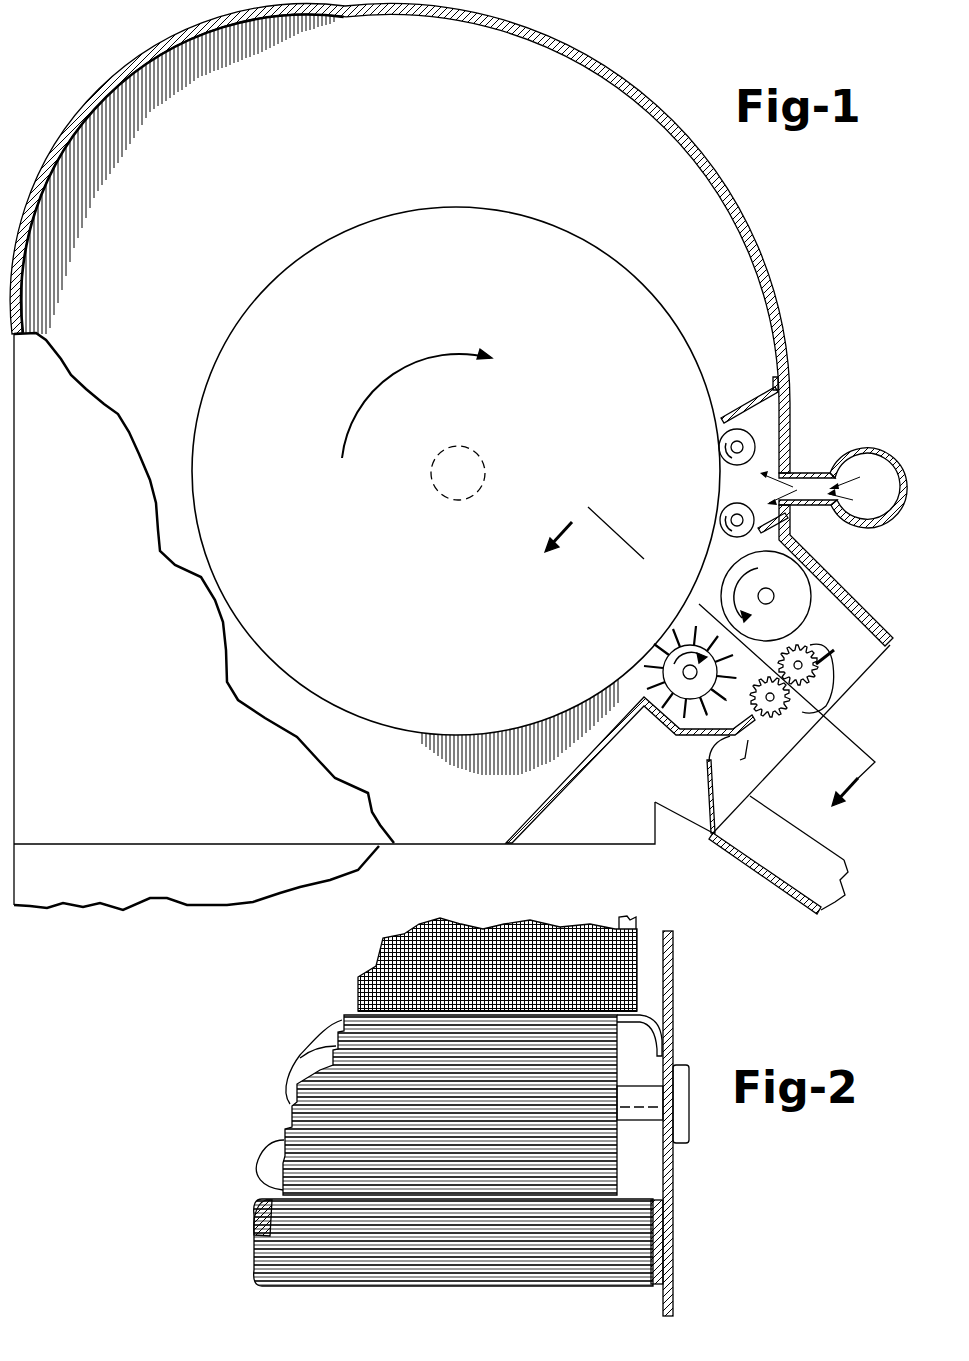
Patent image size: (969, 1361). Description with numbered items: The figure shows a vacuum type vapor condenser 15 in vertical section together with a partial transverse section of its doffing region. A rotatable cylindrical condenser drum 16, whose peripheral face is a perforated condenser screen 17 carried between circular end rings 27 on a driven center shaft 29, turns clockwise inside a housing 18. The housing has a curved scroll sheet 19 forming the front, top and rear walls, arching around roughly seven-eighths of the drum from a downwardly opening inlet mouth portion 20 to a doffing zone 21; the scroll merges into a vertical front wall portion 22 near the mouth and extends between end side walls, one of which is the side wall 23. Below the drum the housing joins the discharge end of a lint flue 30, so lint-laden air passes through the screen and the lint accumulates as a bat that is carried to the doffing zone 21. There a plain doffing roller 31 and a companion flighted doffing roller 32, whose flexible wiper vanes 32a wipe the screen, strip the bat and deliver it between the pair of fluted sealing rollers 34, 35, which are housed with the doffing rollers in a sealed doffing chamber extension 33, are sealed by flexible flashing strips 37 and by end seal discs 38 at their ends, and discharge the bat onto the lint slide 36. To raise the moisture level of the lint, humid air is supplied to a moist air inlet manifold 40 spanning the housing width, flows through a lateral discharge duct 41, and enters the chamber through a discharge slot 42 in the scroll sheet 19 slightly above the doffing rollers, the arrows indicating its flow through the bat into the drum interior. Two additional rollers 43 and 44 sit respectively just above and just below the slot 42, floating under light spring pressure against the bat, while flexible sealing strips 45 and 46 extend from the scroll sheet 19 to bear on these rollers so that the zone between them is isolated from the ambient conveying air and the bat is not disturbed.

In FIG. 1, the vapor condenser 15 is at (633, 88).
In FIG. 1, the condenser drum 16 is at (509, 200).
In FIG. 2, the condenser drum 16 is at (537, 925).
In FIG. 1, the condenser screen 17 is at (402, 206).
In FIG. 2, the condenser screen 17 is at (354, 988).
In FIG. 1, the housing 18 is at (105, 94).
In FIG. 1, the scroll sheet 19 is at (168, 52).
In FIG. 1, the inlet mouth portion 20 is at (93, 852).
In FIG. 1, the doffing zone 21 is at (702, 691).
In FIG. 1, the front wall portion 22 is at (14, 533).
In FIG. 1, the side wall 23 is at (98, 423).
In FIG. 2, the side wall 23 is at (673, 993).
In FIG. 2, the end ring 27 is at (623, 920).
In FIG. 1, the center shaft 29 is at (478, 457).
In FIG. 1, the lint flue 30 is at (237, 887).
In FIG. 1, the plain doffing roller 31 is at (800, 581).
In FIG. 1, the flighted doffing roller 32 is at (652, 685).
In FIG. 2, the flighted doffing roller 32 is at (278, 1122).
In FIG. 1, the wiper vanes 32a is at (666, 632).
In FIG. 2, the wiper vanes 32a is at (312, 1048).
In FIG. 1, the doffing chamber extension 33 is at (860, 612).
In FIG. 1, the fluted sealing roller 34 is at (828, 710).
In FIG. 1, the fluted sealing roller 35 is at (811, 722).
In FIG. 2, the fluted sealing roller 35 is at (405, 1290).
In FIG. 1, the lint slide 36 is at (783, 850).
In FIG. 1, the flashing strips 37 is at (876, 636).
In FIG. 2, the end seal disc 38 is at (660, 1234).
In FIG. 1, the moist air inlet manifold 40 is at (870, 446).
In FIG. 1, the discharge duct 41 is at (800, 473).
In FIG. 1, the discharge slot 42 is at (790, 487).
In FIG. 1, the roller 43 is at (718, 447).
In FIG. 1, the roller 44 is at (720, 522).
In FIG. 1, the sealing strip 45 is at (757, 398).
In FIG. 1, the sealing strip 46 is at (790, 537).